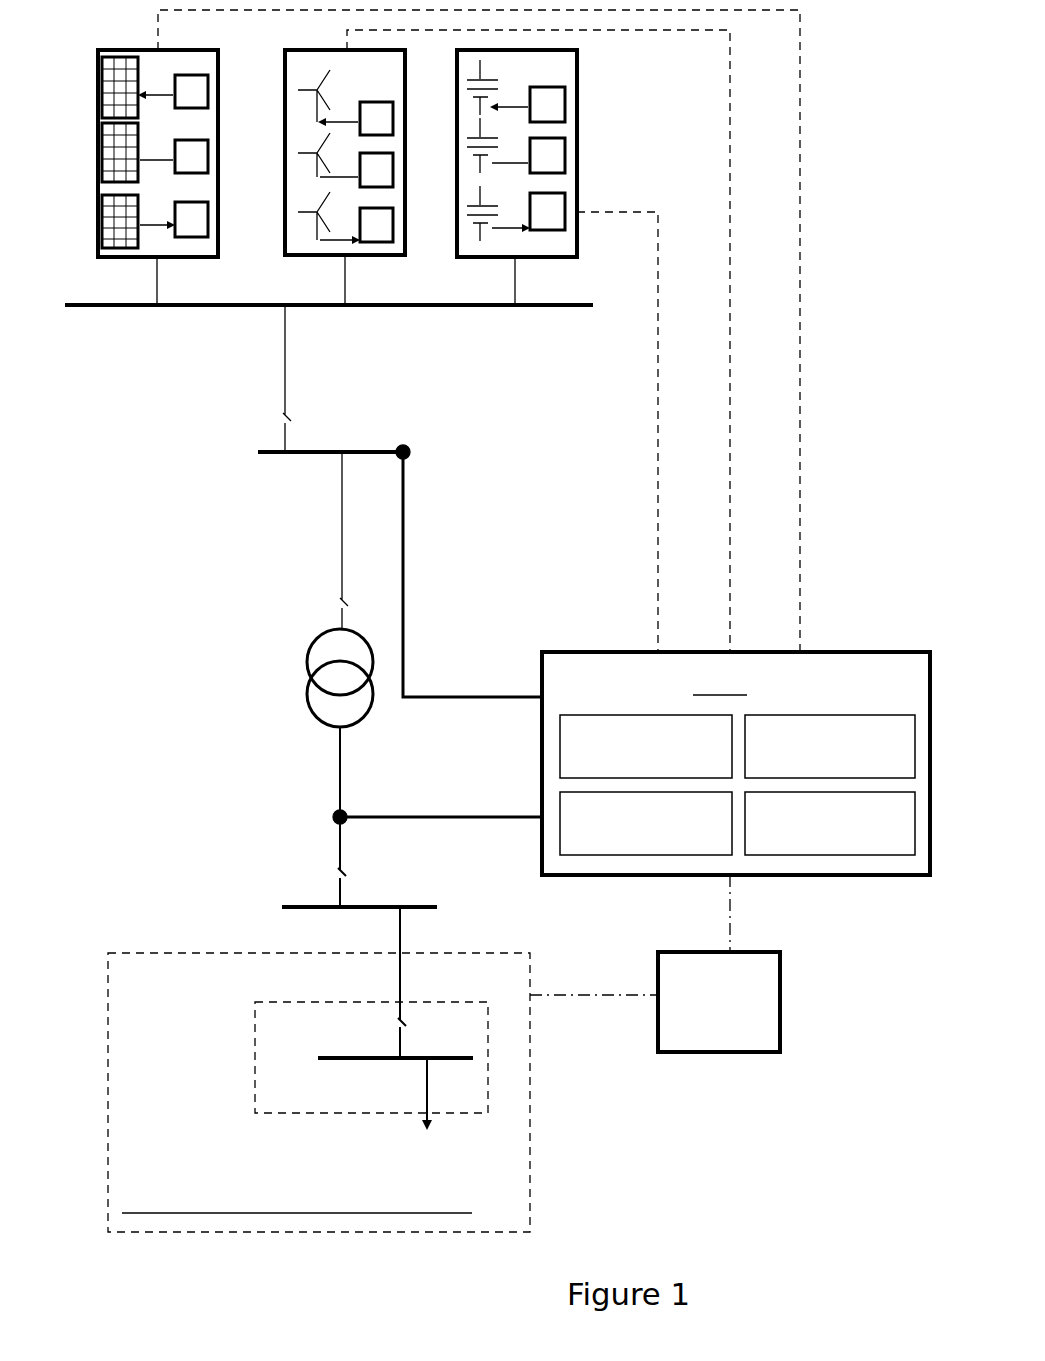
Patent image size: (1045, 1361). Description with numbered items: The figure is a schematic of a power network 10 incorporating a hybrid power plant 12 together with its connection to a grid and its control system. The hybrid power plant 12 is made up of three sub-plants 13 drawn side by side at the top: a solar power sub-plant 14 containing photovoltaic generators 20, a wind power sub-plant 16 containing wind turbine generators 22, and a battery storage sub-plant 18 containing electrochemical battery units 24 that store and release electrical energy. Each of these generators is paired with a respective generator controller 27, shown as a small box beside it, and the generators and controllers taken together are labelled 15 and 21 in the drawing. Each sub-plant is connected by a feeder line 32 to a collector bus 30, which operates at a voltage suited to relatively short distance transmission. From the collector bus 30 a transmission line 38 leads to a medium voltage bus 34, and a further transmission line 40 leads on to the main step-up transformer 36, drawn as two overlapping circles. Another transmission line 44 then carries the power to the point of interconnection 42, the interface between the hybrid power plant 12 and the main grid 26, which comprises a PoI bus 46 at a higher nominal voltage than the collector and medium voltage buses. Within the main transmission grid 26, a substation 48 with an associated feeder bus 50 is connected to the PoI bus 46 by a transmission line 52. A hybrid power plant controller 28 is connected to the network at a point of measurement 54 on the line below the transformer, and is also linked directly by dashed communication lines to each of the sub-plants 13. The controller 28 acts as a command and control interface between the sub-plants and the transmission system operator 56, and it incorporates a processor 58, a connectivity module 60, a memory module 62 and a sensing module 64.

The power network 10 is at (108, 608).
The hybrid power plant 12 is at (632, 132).
The sub-plants 13 is at (208, 292).
The solar power sub-plant 14 is at (218, 52).
The power converters 15 is at (296, 128).
The wind power sub-plant 16 is at (385, 257).
The battery storage sub-plant 18 is at (577, 190).
The photovoltaic generators 20 is at (108, 258).
The solar inverters 21 is at (218, 212).
The wind turbine generators 22 is at (314, 238).
The electrochemical battery units 24 is at (463, 128).
The main grid 26 is at (532, 1178).
The generator controller 27 is at (567, 105).
The hybrid power plant controller 28 is at (858, 650).
The collector bus 30 is at (478, 307).
The feeder line 32 is at (517, 282).
The medium voltage bus 34 is at (258, 455).
The main step-up transformer 36 is at (307, 707).
The transmission line 38 is at (287, 363).
The transmission line 40 is at (340, 527).
The point of interconnection 42 is at (294, 904).
The transmission line 44 is at (343, 772).
The PoI bus 46 is at (432, 902).
The substation 48 is at (258, 1033).
The feeder bus 50 is at (338, 1055).
The transmission line 52 is at (402, 935).
The point of measurement 54 is at (320, 817).
The transmission system operator 56 is at (782, 997).
The processor 58 is at (597, 712).
The connectivity module 60 is at (810, 712).
The memory module 62 is at (630, 855).
The sensing module 64 is at (875, 855).